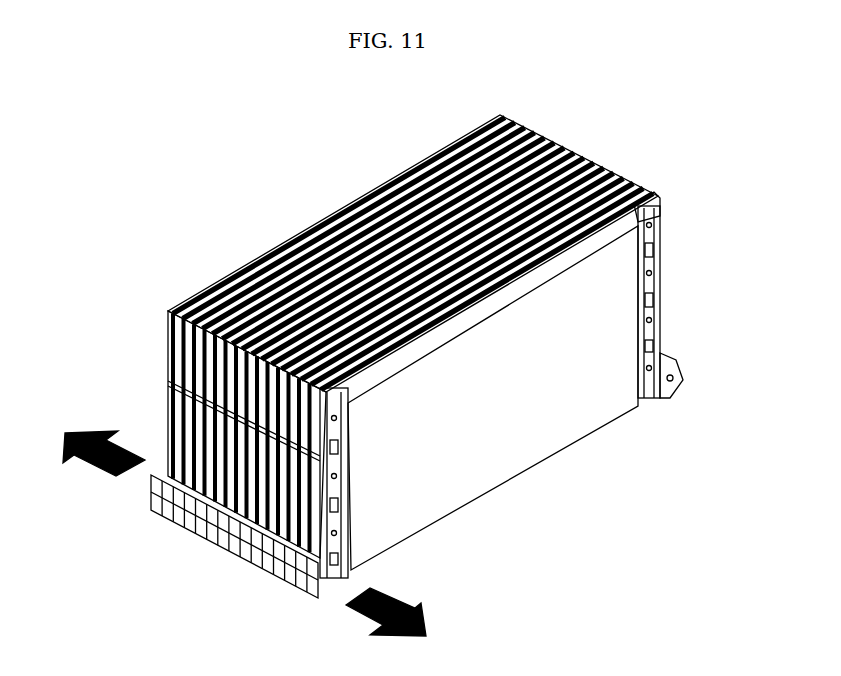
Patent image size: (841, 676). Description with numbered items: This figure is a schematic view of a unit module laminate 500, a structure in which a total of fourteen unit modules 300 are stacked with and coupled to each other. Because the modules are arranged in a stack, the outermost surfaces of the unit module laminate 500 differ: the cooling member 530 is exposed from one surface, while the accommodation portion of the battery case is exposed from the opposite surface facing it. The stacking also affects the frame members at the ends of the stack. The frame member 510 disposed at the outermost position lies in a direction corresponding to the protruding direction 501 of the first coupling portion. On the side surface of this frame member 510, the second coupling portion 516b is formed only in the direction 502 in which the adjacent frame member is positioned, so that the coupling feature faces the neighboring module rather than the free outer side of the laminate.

The unit module laminate 500 is at (123, 149).
The unit module 300 is at (352, 180).
The frame member 510 is at (652, 237).
The second coupling portion 516b is at (633, 190).
The cooling member 530 is at (520, 432).
The protruding direction of the first coupling portion 501 is at (393, 607).
The direction in which the adjacent frame member is positioned 502 is at (104, 465).